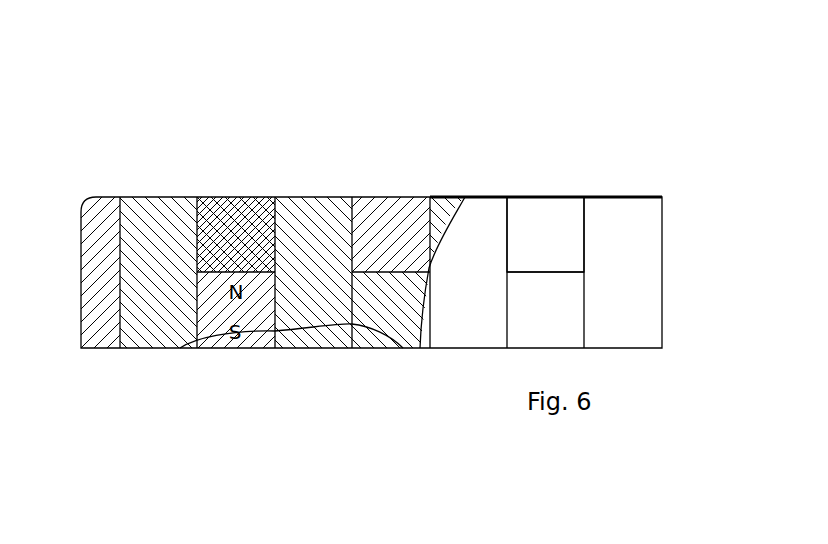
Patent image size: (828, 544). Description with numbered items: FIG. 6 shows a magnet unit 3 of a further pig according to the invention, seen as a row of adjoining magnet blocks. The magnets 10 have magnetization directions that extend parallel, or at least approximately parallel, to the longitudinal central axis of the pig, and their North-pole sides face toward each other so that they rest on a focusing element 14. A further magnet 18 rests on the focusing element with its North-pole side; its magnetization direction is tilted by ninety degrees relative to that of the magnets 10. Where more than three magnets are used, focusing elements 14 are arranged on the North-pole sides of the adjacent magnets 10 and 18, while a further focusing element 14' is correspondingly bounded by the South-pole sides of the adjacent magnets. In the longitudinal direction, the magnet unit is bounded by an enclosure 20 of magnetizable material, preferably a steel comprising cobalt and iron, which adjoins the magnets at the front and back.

The magnet unit 3 is at (571, 136).
The magnet 10 is at (453, 208).
The focusing element 14 is at (401, 208).
The further focusing element 14' is at (391, 207).
The magnet 18 is at (215, 325).
The enclosure 20 is at (96, 333).